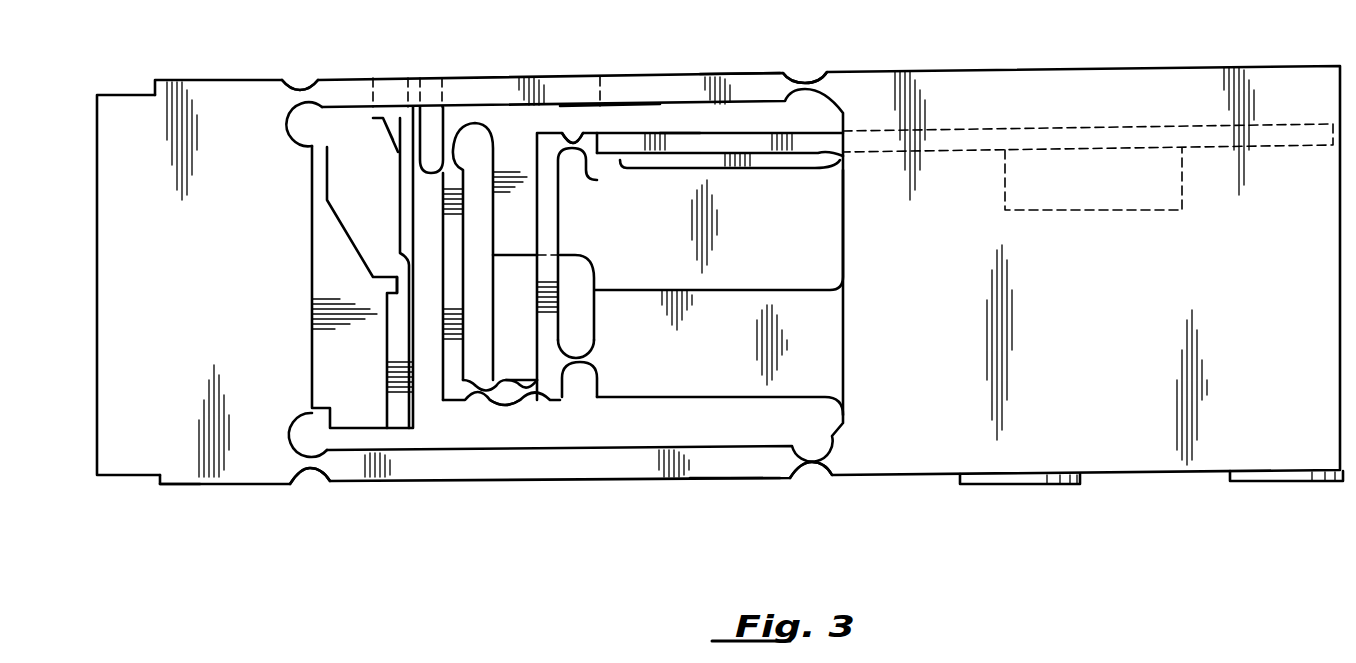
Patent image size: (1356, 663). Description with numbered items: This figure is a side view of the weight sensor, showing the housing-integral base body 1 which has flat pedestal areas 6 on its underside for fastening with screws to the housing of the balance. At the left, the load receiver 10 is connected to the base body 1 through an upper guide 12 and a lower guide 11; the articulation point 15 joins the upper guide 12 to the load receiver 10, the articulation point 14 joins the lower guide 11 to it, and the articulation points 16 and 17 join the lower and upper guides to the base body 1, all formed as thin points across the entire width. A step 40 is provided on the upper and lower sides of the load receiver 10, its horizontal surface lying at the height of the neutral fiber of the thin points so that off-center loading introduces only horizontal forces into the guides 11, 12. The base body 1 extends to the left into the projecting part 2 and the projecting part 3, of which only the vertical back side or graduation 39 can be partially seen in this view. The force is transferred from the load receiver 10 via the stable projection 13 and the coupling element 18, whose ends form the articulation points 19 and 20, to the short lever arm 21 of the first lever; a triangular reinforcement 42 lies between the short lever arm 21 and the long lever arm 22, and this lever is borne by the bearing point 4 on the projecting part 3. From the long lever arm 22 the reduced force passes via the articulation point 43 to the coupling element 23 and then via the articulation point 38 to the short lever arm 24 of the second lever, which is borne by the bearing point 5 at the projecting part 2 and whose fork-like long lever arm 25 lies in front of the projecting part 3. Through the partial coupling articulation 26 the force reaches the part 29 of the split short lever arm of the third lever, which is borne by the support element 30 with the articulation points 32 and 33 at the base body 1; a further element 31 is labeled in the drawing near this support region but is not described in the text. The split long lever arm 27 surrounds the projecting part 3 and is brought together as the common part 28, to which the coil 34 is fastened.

The base body 1 is at (1133, 453).
The projecting part 2 is at (647, 388).
The projecting part 3 is at (483, 117).
The bearing point 4 is at (467, 110).
The bearing point 5 is at (600, 343).
The pedestal area 6 is at (1013, 480).
The load receiver 10 is at (190, 470).
The lower guide 11 is at (732, 458).
The upper guide 12 is at (742, 85).
The projection 13 is at (330, 368).
The articulation point 14 is at (310, 467).
The articulation point 15 is at (305, 92).
The articulation point 16 is at (817, 460).
The articulation point 17 is at (812, 83).
The coupling element 18 is at (400, 188).
The articulation point 19 is at (400, 258).
The articulation point 20 is at (395, 148).
The short lever arm 21 is at (400, 118).
The long lever arm 22 is at (455, 297).
The coupling element 23 is at (500, 402).
The short lever arm 24 is at (557, 400).
The long lever arm 25 is at (552, 230).
The partial coupling articulation 26 is at (577, 138).
The long lever arm 27 is at (683, 140).
The long lever arm part 28 is at (1043, 135).
The short lever arm part 29 is at (582, 172).
The support element 30 is at (717, 170).
The chamber right wall 31 is at (833, 172).
The articulation point 32 is at (632, 172).
The articulation point 33 is at (820, 165).
The coil 34 is at (1152, 212).
The articulation point 38 is at (527, 383).
The graduation 39 is at (612, 124).
The step 40 is at (110, 92).
The triangular reinforcement 42 is at (385, 128).
The articulation point 43 is at (483, 395).